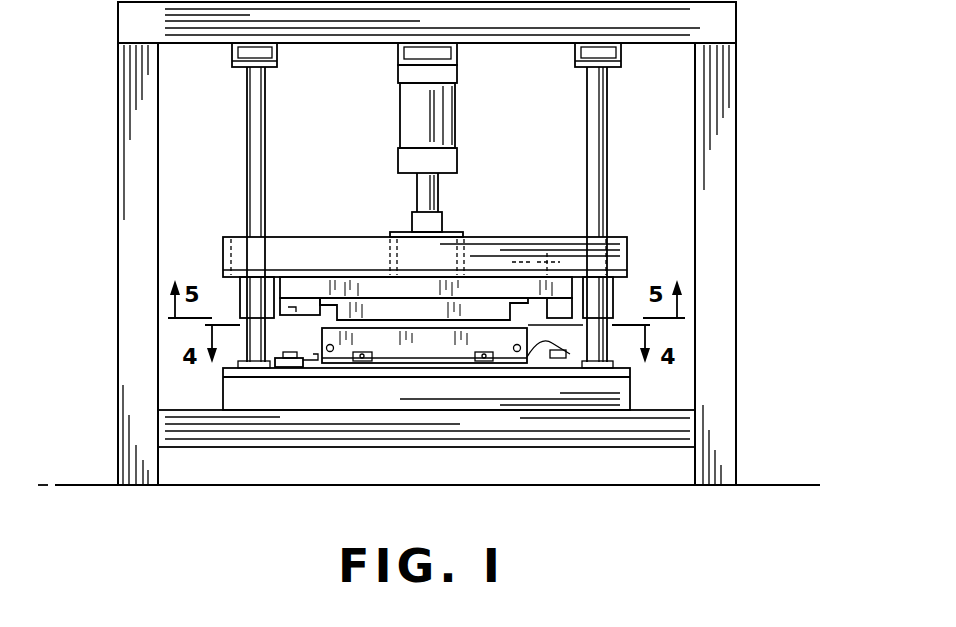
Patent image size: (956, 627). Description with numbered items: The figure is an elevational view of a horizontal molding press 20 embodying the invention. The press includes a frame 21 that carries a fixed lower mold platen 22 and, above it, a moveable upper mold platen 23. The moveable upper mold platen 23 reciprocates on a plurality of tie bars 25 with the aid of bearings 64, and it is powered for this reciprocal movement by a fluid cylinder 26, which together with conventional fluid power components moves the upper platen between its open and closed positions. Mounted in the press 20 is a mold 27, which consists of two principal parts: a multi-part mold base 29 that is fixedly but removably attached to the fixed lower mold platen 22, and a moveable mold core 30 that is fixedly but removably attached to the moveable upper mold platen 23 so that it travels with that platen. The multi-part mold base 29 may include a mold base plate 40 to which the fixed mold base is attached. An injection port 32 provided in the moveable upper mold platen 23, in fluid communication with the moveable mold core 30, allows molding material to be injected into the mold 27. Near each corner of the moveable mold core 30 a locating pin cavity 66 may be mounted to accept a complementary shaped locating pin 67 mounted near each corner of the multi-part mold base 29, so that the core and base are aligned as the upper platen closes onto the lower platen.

The horizontal molding press 20 is at (754, 116).
The frame 21 is at (130, 187).
The fixed lower mold platen 22 is at (607, 398).
The moveable upper mold platen 23 is at (608, 250).
The tie bars 25 is at (258, 151).
The fluid cylinder 26 is at (413, 118).
The mold 27 is at (580, 346).
The multi-part mold base 29 is at (313, 308).
The moveable mold core 30 is at (383, 299).
The injection port 32 is at (541, 262).
The mold base plate 40 is at (300, 366).
The bearings 64 is at (613, 298).
The locating pin cavity 66 is at (558, 308).
The locating pin 67 is at (546, 340).